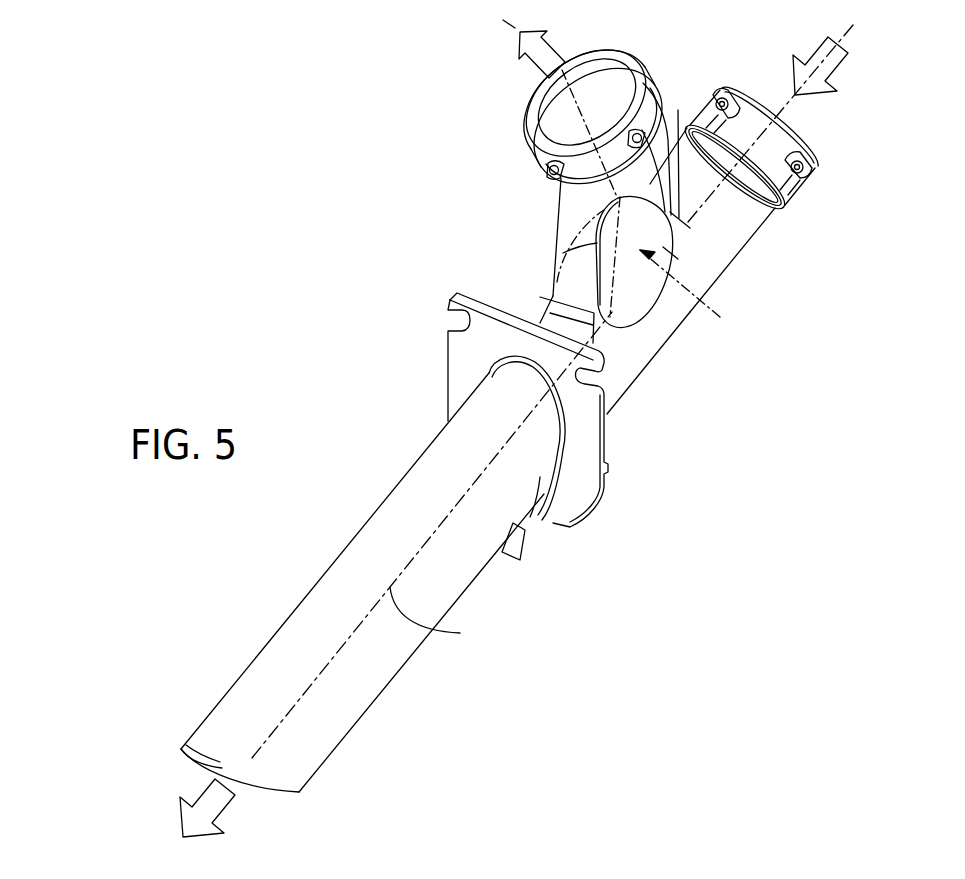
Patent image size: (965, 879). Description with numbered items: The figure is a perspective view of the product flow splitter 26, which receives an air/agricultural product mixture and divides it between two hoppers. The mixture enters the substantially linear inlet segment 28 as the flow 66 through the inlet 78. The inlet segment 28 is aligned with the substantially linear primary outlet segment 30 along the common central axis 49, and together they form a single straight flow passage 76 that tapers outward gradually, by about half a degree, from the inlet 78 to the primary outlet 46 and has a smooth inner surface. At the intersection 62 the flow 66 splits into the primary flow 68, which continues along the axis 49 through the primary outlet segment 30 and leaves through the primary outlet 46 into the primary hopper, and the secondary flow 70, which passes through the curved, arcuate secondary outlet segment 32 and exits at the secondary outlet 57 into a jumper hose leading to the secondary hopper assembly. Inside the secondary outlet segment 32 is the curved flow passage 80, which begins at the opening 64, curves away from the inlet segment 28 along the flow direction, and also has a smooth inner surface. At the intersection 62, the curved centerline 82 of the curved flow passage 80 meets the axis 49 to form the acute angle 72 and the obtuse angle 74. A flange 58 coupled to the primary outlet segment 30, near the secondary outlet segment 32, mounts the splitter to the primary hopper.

The product flow splitter 26 is at (445, 180).
The inlet segment 28 is at (747, 218).
The primary outlet segment 30 is at (630, 373).
The secondary outlet segment 32 is at (578, 207).
The primary outlet 46 is at (207, 760).
The common central axis 49 is at (444, 619).
The secondary outlet 57 is at (551, 110).
The flange 58 is at (465, 360).
The intersection 62 is at (673, 352).
The opening 64 is at (691, 299).
The flow 66 is at (833, 63).
The primary flow 68 is at (216, 807).
The secondary flow 70 is at (540, 66).
The angle 72 is at (678, 110).
The angle 74 is at (594, 263).
The straight flow passage 76 is at (784, 228).
The inlet 78 is at (822, 163).
The curved flow passage 80 is at (654, 67).
The curved centerline 82 is at (590, 114).